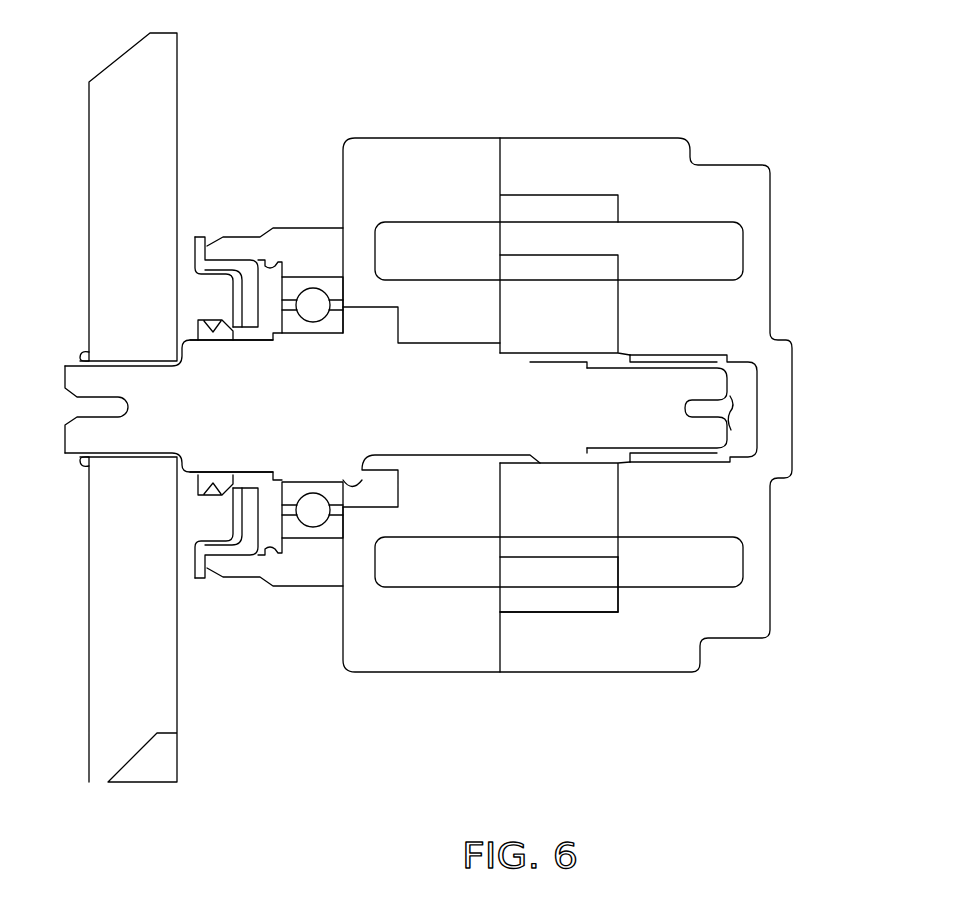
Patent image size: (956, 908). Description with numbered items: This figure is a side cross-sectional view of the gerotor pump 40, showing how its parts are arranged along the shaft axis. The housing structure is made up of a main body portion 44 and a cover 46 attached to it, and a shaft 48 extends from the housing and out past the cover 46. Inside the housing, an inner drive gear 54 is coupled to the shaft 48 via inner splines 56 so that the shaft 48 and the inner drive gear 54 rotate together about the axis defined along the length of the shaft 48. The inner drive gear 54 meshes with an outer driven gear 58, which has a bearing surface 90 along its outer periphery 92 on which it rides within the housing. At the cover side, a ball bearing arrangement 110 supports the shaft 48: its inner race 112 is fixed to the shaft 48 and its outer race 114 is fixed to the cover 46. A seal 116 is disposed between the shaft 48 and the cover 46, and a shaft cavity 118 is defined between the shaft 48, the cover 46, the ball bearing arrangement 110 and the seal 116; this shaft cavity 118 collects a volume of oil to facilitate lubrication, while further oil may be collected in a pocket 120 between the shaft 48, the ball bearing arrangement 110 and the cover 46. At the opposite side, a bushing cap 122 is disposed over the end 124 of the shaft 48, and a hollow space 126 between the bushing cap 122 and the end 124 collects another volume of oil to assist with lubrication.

The pump 40 is at (716, 134).
The main body portion 44 is at (717, 194).
The cover 46 is at (403, 170).
The shaft 48 is at (77, 440).
The inner drive gear 54 is at (527, 547).
The inner splines 56 is at (568, 451).
The outer driven gear 58 is at (614, 598).
The bearing surface 90 is at (556, 612).
The outer periphery 92 is at (529, 616).
The ball bearing arrangement 110 is at (305, 338).
The inner race 112 is at (337, 328).
The outer race 114 is at (297, 283).
The seal 116 is at (222, 333).
The shaft cavity 118 is at (276, 330).
The pocket 120 is at (373, 327).
The bushing cap 122 is at (757, 423).
The end 124 is at (703, 455).
The hollow space 126 is at (740, 408).